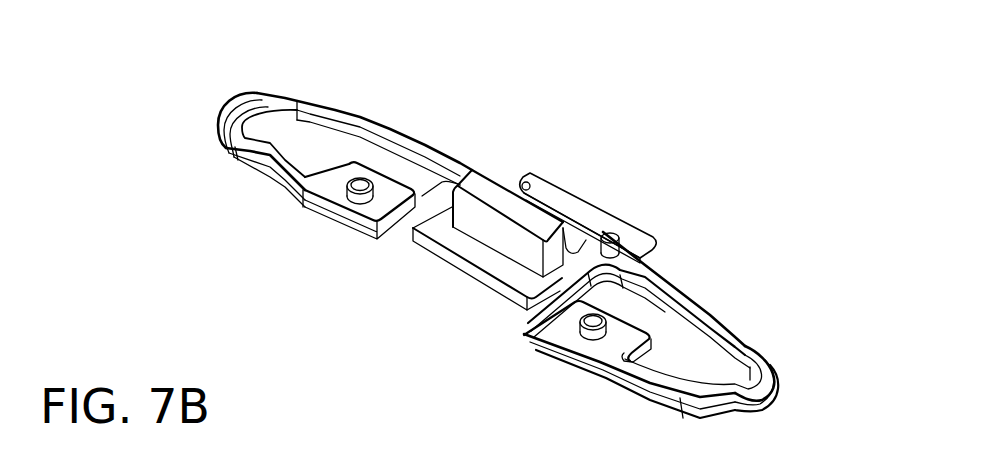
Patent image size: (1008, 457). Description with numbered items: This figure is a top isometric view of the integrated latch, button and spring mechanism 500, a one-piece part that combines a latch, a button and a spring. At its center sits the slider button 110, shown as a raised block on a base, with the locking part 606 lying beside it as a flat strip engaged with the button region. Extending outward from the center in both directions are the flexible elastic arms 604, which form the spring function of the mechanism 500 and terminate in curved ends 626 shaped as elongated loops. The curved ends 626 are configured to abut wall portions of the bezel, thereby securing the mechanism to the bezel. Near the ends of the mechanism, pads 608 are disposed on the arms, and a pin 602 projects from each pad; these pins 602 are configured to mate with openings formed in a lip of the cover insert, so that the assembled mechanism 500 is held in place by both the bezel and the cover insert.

The integrated latch, button and spring mechanism 500 is at (181, 85).
The slider button 110 is at (490, 187).
The pins 602 is at (362, 186).
The elastic arms 604 is at (358, 116).
The locking part 606 is at (597, 205).
The pads 608 is at (378, 208).
The curved ends 626 is at (256, 95).